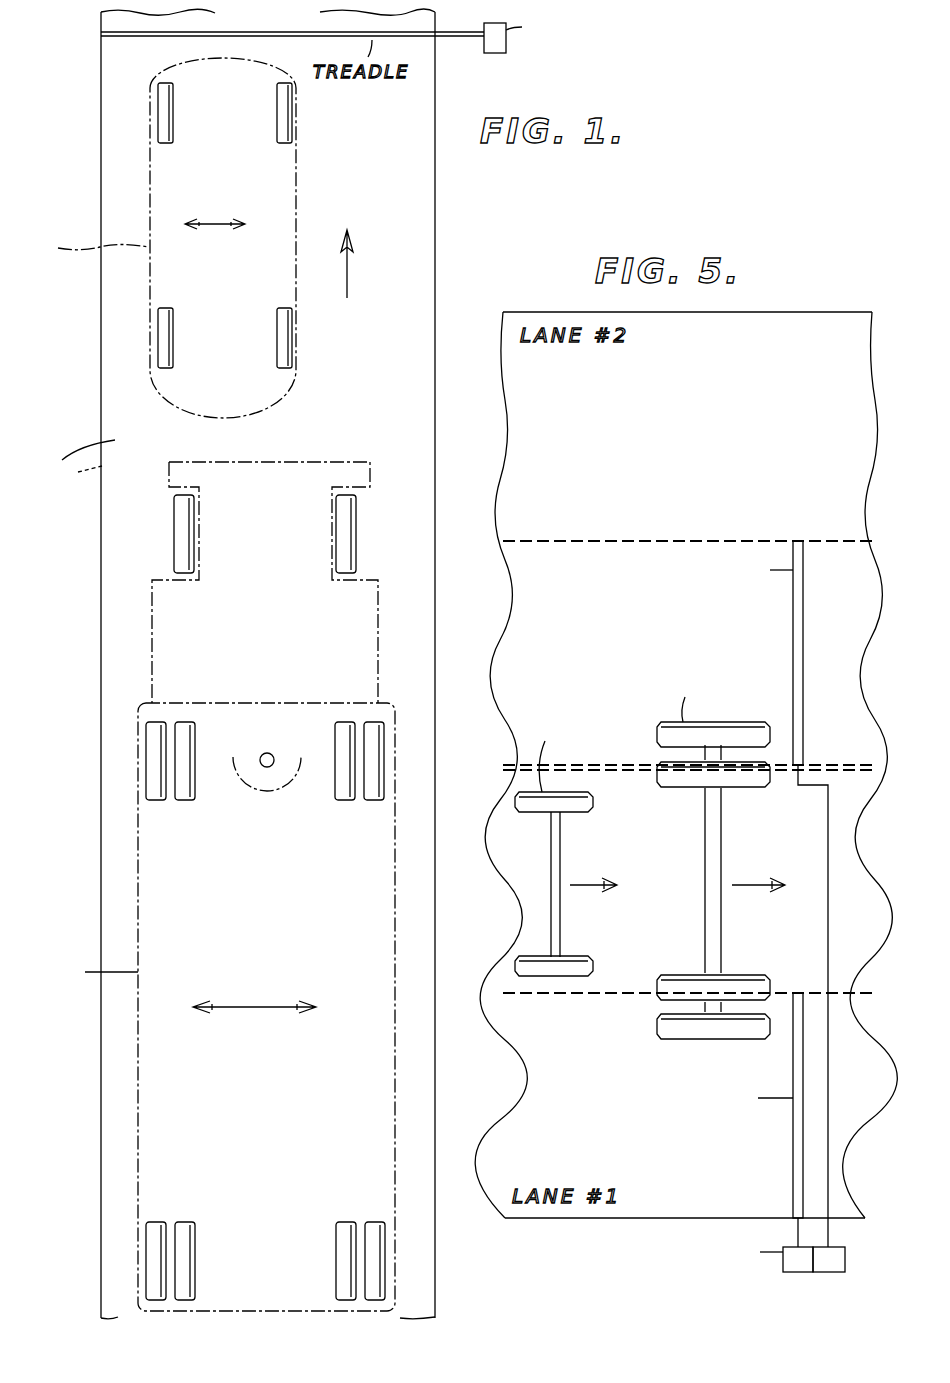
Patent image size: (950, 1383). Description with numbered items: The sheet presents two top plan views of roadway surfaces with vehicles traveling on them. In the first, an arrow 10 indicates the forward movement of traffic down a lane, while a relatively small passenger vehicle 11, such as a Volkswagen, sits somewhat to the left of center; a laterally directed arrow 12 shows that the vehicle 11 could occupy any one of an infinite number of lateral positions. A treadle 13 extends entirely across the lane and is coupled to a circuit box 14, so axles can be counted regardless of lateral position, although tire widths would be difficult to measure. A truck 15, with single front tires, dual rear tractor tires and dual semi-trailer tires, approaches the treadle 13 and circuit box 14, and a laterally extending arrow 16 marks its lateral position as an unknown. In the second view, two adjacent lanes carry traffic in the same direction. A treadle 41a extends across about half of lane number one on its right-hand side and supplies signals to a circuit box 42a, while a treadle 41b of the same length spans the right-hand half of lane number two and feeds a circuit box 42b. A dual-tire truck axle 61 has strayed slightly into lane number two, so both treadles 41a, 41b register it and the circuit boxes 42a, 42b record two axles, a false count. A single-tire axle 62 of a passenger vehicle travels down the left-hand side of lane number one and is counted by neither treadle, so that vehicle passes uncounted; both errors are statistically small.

In FIG. 1, the arrow 10 is at (347, 275).
In FIG. 1, the passenger vehicle 11 is at (189, 238).
In FIG. 1, the laterally directed arrow 12 is at (215, 222).
In FIG. 1, the treadle 13 is at (118, 36).
In FIG. 1, the circuit box 14 is at (506, 48).
In FIG. 1, the truck 15 is at (152, 638).
In FIG. 1, the laterally extending arrow 16 is at (250, 1007).
In FIG. 5, the treadle 41a is at (793, 1140).
In FIG. 5, the treadle 41b is at (793, 620).
In FIG. 5, the circuit box 42a is at (793, 1273).
In FIG. 5, the circuit box 42b is at (832, 1272).
In FIG. 5, the truck axle 61 is at (705, 828).
In FIG. 5, the single-tire axle 62 is at (560, 838).